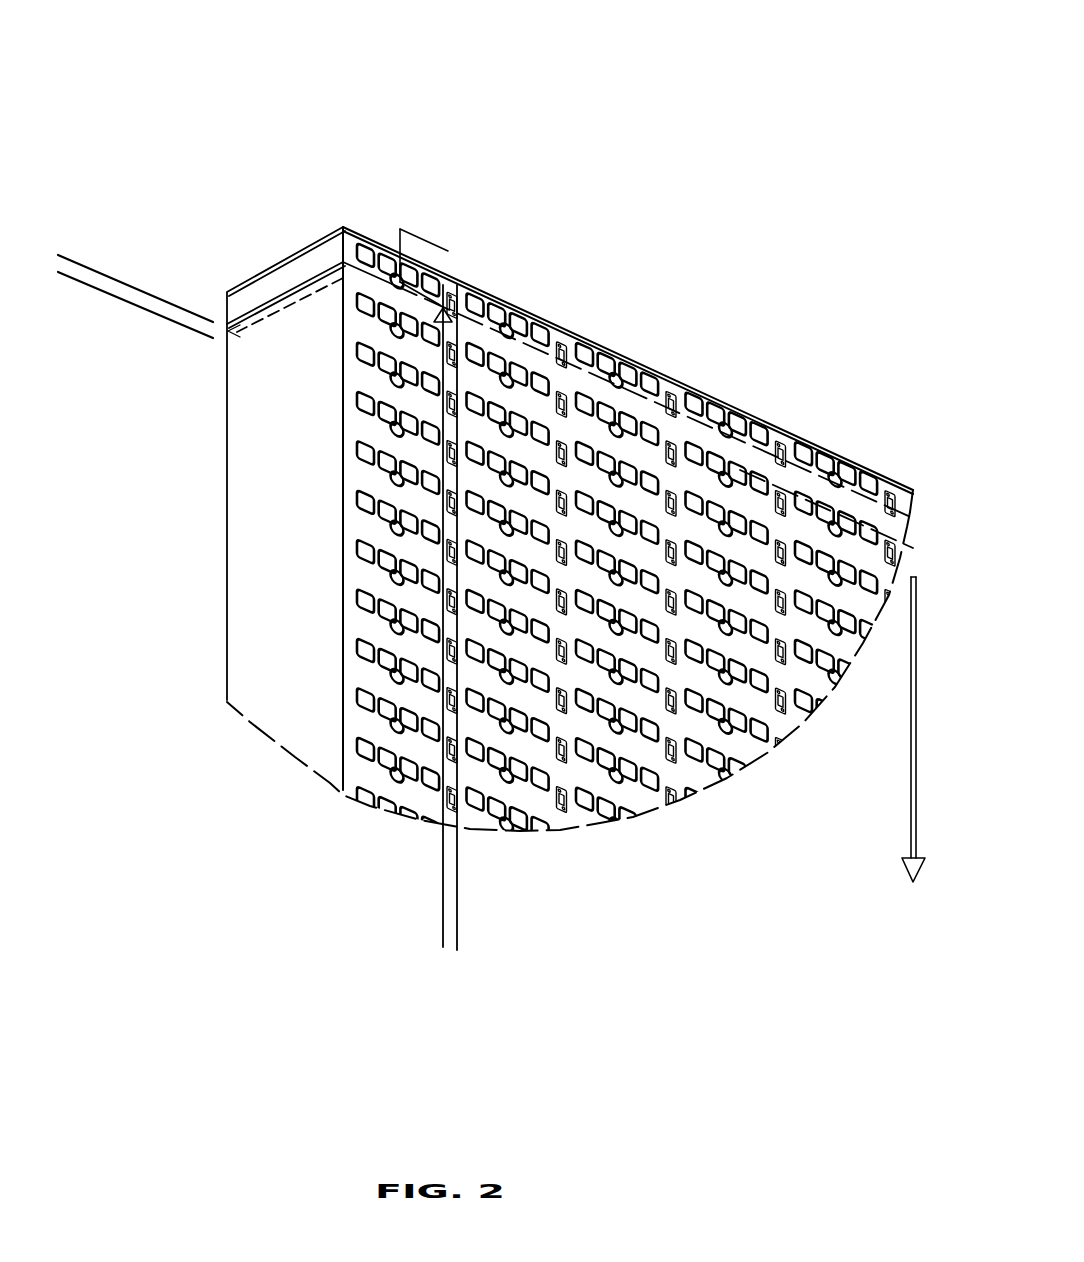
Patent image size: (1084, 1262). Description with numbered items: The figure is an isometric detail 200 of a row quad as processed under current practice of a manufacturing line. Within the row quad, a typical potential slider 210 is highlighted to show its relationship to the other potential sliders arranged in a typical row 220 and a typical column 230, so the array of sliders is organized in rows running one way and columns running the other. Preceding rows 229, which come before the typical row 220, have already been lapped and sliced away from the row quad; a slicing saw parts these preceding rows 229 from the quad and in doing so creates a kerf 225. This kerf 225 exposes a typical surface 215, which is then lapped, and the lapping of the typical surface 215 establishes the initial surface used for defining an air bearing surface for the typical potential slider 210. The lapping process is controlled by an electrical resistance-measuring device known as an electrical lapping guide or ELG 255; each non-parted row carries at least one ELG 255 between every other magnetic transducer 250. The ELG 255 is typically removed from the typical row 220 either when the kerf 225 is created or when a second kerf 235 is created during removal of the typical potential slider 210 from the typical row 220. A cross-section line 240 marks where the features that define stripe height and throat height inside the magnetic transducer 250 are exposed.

The isometric detail 200 is at (157, 34).
The typical potential slider 210 is at (300, 268).
The typical surface 215 is at (270, 315).
The typical row 220 is at (192, 289).
The kerf 225 is at (68, 352).
The preceding rows 229 is at (911, 729).
The typical column 230 is at (343, 195).
The kerf 235 is at (370, 877).
The cross-section line 240 is at (442, 242).
The magnetic transducer 250 is at (626, 651).
The electrical lapping guide (ELG) 255 is at (567, 330).